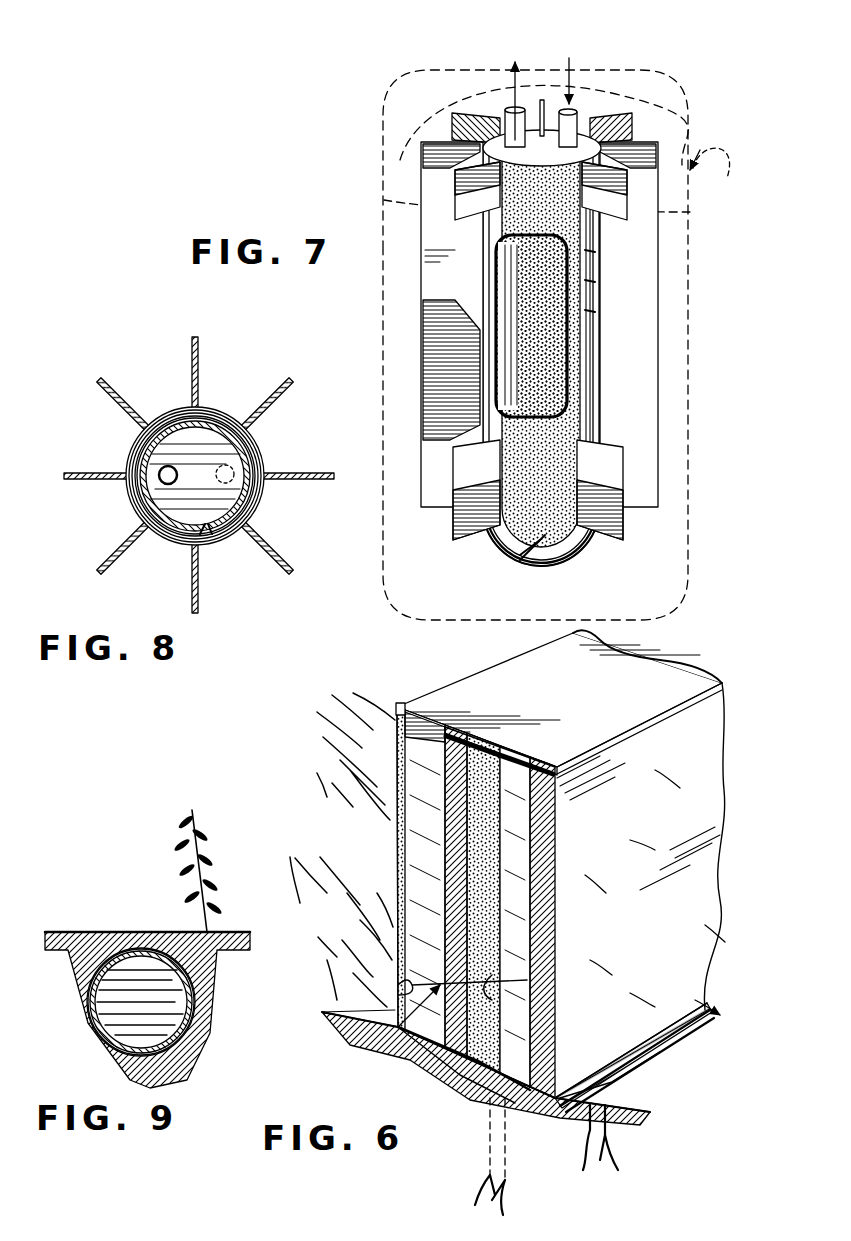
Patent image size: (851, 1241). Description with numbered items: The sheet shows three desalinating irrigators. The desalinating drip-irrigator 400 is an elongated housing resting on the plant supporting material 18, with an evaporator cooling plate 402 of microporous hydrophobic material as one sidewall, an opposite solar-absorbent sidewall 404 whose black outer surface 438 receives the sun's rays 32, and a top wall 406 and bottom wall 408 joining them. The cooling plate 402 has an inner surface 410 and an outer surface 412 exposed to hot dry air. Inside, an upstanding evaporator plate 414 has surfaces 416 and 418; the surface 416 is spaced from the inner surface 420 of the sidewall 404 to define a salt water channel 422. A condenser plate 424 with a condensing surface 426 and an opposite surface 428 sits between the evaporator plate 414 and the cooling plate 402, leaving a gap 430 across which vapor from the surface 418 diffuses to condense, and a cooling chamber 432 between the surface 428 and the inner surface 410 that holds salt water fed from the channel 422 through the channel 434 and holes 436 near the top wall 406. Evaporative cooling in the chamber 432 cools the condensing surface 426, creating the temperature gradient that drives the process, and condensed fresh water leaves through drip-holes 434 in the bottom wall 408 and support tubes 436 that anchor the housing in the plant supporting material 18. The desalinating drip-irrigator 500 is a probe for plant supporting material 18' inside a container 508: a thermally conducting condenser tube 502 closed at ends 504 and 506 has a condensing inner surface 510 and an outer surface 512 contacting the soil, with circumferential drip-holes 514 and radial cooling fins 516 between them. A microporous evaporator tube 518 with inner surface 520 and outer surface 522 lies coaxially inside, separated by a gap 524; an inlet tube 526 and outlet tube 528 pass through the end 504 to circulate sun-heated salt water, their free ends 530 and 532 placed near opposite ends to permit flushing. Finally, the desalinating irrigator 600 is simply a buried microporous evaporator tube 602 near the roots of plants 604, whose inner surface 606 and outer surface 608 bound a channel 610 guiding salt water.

In FIG. 9, the plant supporting material 18 is at (147, 1025).
In FIG. 6, the plant supporting material 18 is at (451, 1068).
In FIG. 7, the plant supporting material 18' is at (535, 343).
In FIG. 6, the sun's rays 32 is at (293, 824).
In FIG. 6, the desalinating drip-irrigator 400 is at (670, 657).
In FIG. 6, the evaporator cooling plate 402 is at (705, 740).
In FIG. 6, the second sidewall 404 is at (397, 787).
In FIG. 6, the top wall 406 is at (632, 688).
In FIG. 6, the bottom wall 408 is at (642, 1060).
In FIG. 6, the inner surface 410 is at (600, 1077).
In FIG. 6, the outer surface 412 is at (644, 1050).
In FIG. 6, the evaporator plate 414 is at (392, 1052).
In FIG. 6, the surface 416 is at (425, 735).
In FIG. 6, the surface 418 is at (435, 1076).
In FIG. 6, the inner surface 420 is at (398, 983).
In FIG. 6, the channel 422 is at (420, 847).
In FIG. 6, the condenser plate 424 is at (505, 805).
In FIG. 6, the condensing surface 426 is at (505, 978).
In FIG. 6, the surface 428 is at (510, 928).
In FIG. 6, the gap 430 is at (485, 845).
In FIG. 6, the cooling chamber 432 is at (520, 874).
In FIG. 6, the drip-holes 434 is at (517, 762).
In FIG. 6, the support tubes 436 is at (525, 770).
In FIG. 6, the outer surface 438 is at (398, 955).
In FIG. 7, the desalinating drip-irrigator 500 is at (440, 132).
In FIG. 8, the desalinating drip-irrigator 500 is at (188, 334).
In FIG. 7, the condenser tube 502 is at (580, 372).
In FIG. 8, the condenser tube 502 is at (215, 405).
In FIG. 7, the end 504 is at (543, 100).
In FIG. 7, the end 506 is at (538, 567).
In FIG. 7, the container 508 is at (719, 172).
In FIG. 8, the inner surface 510 is at (255, 441).
In FIG. 7, the outer surface 512 is at (617, 403).
In FIG. 8, the outer surface 512 is at (245, 425).
In FIG. 7, the drip-holes 514 is at (615, 312).
In FIG. 8, the drip-holes 514 is at (178, 416).
In FIG. 7, the cooling fins 516 is at (467, 210).
In FIG. 8, the cooling fins 516 is at (194, 352).
In FIG. 7, the evaporator tube 518 is at (540, 465).
In FIG. 8, the evaporator tube 518 is at (210, 534).
In FIG. 8, the inner surface 520 is at (216, 528).
In FIG. 7, the outer surface 522 is at (545, 520).
In FIG. 8, the outer surface 522 is at (246, 511).
In FIG. 8, the gap 524 is at (140, 441).
In FIG. 7, the inlet tube 526 is at (575, 118).
In FIG. 8, the inlet tube 526 is at (250, 478).
In FIG. 7, the outlet tube 528 is at (510, 118).
In FIG. 8, the outlet tube 528 is at (160, 470).
In FIG. 7, the free end 530 is at (688, 216).
In FIG. 7, the free end 532 is at (500, 545).
In FIG. 9, the desalinating irrigator 600 is at (60, 992).
In FIG. 9, the evaporator tube 602 is at (110, 945).
In FIG. 9, the plants 604 is at (183, 840).
In FIG. 9, the inner surface 606 is at (105, 1035).
In FIG. 9, the outer surface 608 is at (196, 1050).
In FIG. 9, the channel 610 is at (188, 1003).